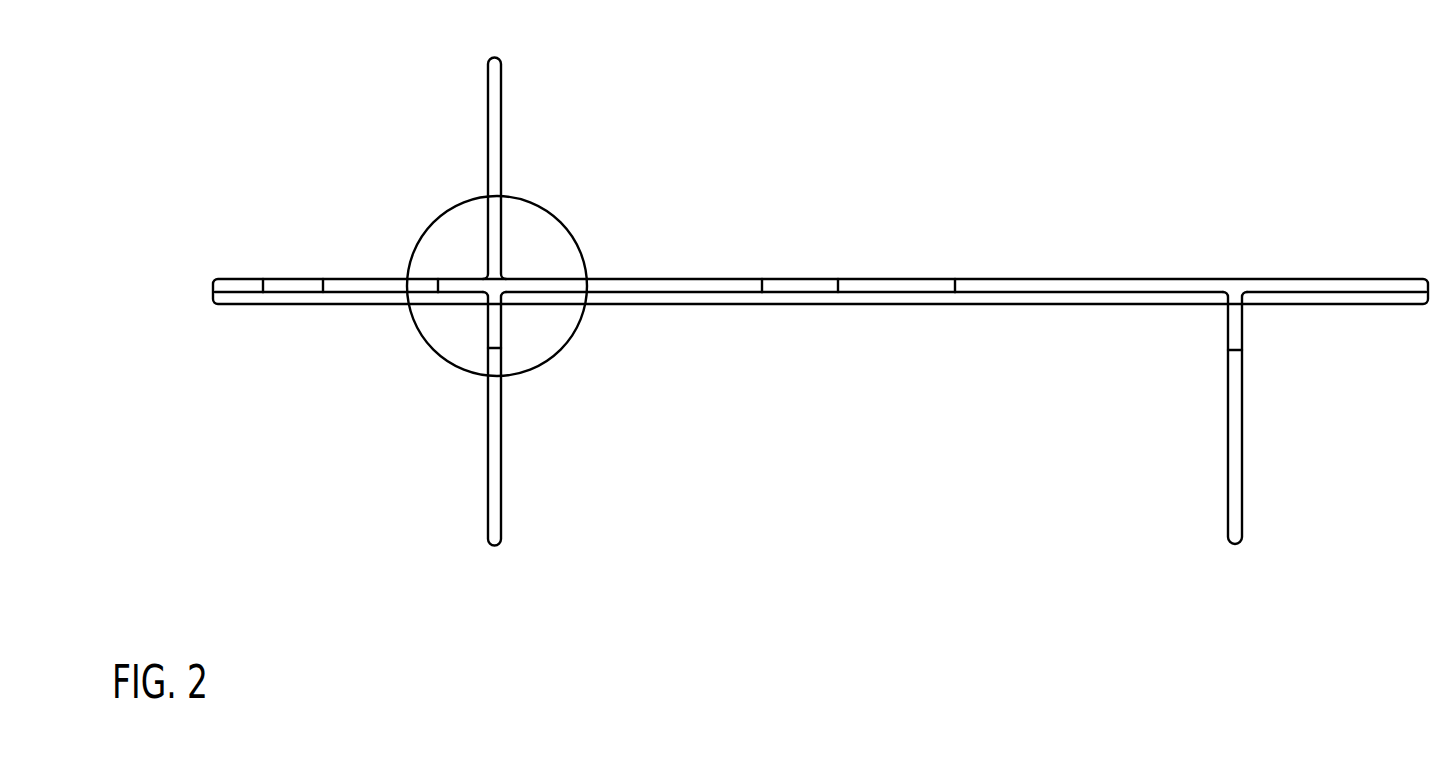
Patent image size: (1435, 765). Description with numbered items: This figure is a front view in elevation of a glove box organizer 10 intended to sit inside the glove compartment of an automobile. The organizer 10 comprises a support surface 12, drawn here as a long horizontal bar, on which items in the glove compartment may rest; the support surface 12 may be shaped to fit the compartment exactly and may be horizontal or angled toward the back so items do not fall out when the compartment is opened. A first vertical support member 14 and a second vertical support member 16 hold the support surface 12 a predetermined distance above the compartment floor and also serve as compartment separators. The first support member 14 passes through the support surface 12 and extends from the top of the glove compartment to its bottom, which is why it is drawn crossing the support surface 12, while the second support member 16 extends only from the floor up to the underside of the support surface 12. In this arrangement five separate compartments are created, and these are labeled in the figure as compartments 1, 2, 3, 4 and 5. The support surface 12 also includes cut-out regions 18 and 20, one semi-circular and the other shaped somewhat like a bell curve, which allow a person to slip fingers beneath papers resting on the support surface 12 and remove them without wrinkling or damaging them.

The first region 1 is at (306, 127).
The second region 2 is at (698, 129).
The third region 3 is at (303, 465).
The fourth region 4 is at (695, 466).
The fifth region 5 is at (1326, 412).
The glove box organizer 10 is at (795, 388).
The support surface 12 is at (982, 279).
The first vertical support member 14 is at (488, 478).
The second vertical support member 16 is at (1228, 472).
The cut-out region 18 is at (323, 279).
The cut-out region 20 is at (838, 279).